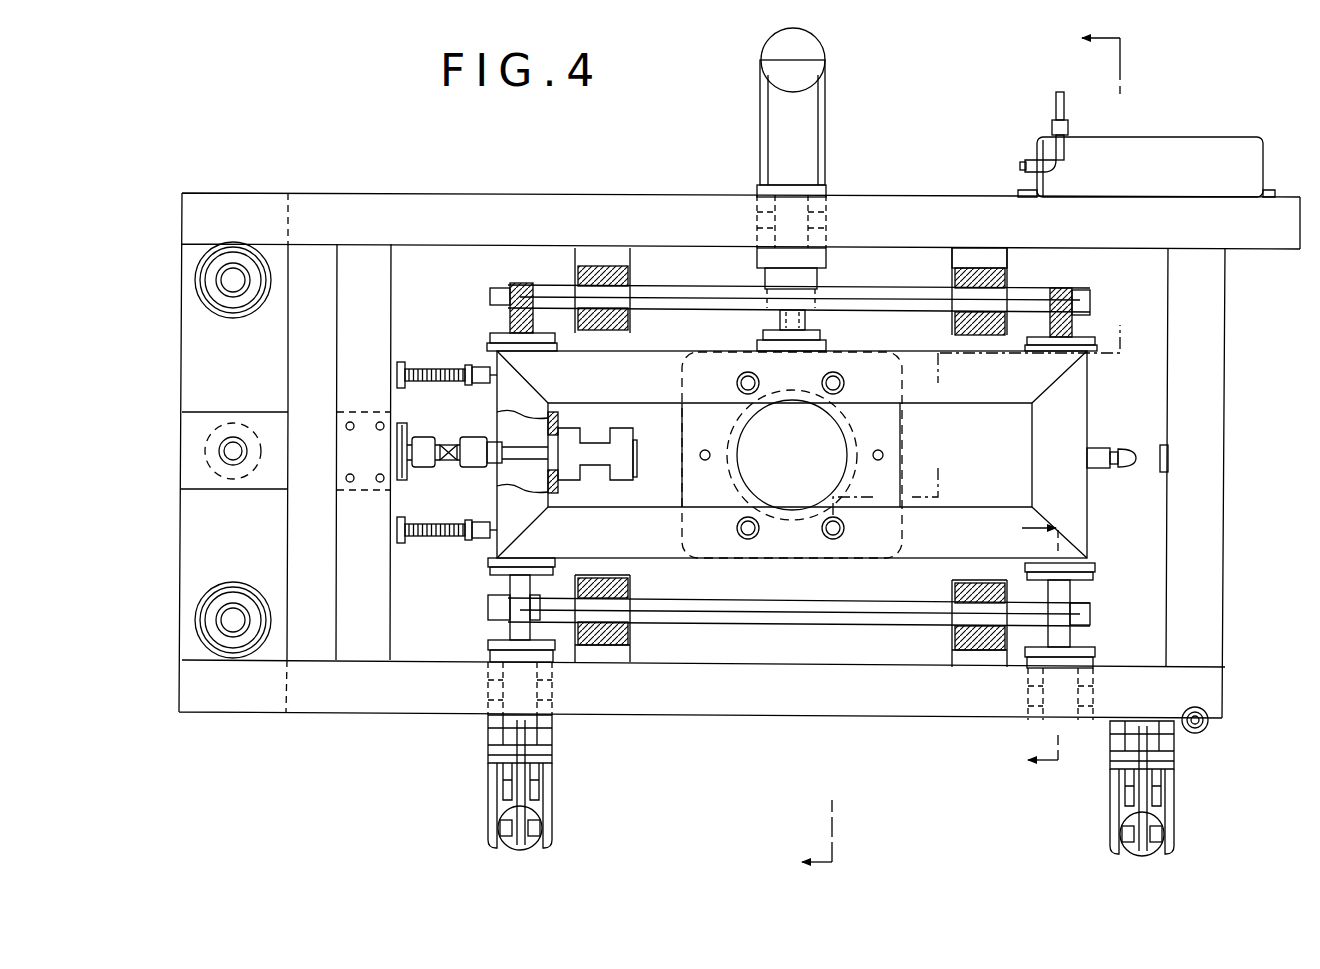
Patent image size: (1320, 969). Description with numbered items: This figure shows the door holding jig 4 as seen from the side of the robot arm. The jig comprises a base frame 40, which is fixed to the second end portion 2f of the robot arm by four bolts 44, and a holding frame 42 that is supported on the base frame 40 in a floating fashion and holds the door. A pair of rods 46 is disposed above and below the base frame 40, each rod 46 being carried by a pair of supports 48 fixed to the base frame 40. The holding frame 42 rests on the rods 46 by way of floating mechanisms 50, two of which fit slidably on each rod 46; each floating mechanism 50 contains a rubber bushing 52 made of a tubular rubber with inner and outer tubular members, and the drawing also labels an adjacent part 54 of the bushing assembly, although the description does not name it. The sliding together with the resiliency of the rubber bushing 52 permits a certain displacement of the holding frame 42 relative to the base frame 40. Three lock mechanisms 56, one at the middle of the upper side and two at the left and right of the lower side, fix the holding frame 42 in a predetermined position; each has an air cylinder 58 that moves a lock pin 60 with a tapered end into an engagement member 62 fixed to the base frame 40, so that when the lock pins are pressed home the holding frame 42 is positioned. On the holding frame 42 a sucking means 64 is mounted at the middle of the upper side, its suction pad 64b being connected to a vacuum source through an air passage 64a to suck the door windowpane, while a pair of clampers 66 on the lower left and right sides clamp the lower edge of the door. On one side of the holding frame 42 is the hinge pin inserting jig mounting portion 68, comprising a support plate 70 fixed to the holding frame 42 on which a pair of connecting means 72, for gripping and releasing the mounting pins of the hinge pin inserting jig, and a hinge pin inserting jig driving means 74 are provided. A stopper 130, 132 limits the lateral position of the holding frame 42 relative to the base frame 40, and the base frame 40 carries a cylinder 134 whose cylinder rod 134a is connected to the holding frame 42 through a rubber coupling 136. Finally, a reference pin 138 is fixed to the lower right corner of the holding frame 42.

The door holding jig 4 is at (903, 140).
The second end portion of the arm 2f is at (902, 423).
The base frame 40 is at (1090, 374).
The holding frame 42 is at (1226, 291).
The bolts 44 is at (826, 540).
The rods 46 is at (684, 310).
The supports 48 is at (505, 325).
The floating mechanisms 50 is at (566, 280).
The rubber bushing 52 is at (955, 282).
The bushing cap 54 is at (962, 268).
The lock mechanisms 56 is at (826, 280).
The air cylinder 58 is at (830, 212).
The lock pin 60 is at (822, 334).
The engagement member 62 is at (810, 322).
The sucking means 64 is at (830, 90).
The air passage 64a is at (1055, 102).
The suction pad 64b is at (826, 52).
The clampers 66 is at (554, 778).
The hinge pin inserting jig mounting portion 68 is at (178, 290).
The support plate 70 is at (180, 346).
The connecting means 72 is at (196, 262).
The hinge pin inserting jig driving means 74 is at (200, 447).
The stopper 130 is at (440, 368).
The stopper 132 is at (1100, 470).
The cylinder 134 is at (600, 428).
The cylinder rod 134a is at (500, 468).
The rubber coupling 136 is at (440, 440).
The reference pin 138 is at (1206, 730).